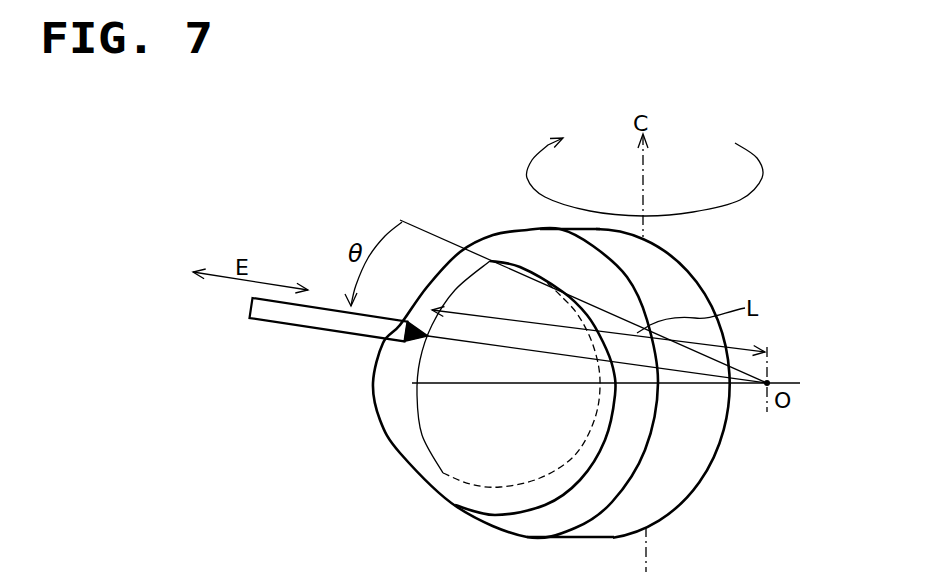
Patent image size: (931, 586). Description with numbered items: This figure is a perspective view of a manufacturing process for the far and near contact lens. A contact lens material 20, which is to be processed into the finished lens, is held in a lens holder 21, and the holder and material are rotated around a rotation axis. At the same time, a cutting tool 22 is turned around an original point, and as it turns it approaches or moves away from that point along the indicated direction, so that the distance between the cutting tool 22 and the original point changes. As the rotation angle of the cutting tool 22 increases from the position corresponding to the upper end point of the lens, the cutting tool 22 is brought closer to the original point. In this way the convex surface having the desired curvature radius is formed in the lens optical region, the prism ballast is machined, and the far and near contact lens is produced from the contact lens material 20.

The contact lens material 20 is at (408, 442).
The lens holder 21 is at (684, 478).
The cutting tool 22 is at (298, 330).